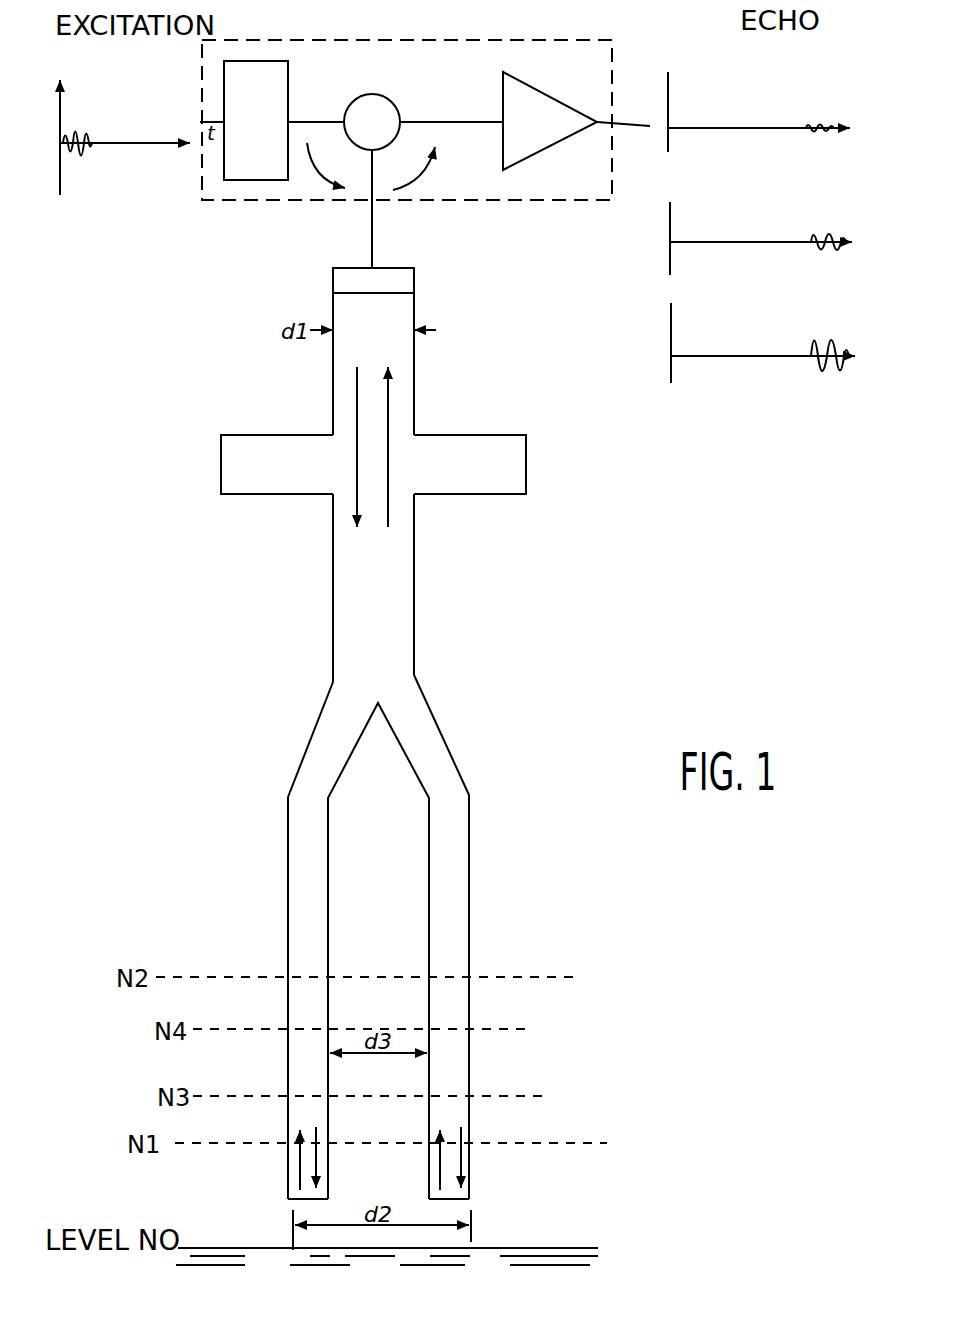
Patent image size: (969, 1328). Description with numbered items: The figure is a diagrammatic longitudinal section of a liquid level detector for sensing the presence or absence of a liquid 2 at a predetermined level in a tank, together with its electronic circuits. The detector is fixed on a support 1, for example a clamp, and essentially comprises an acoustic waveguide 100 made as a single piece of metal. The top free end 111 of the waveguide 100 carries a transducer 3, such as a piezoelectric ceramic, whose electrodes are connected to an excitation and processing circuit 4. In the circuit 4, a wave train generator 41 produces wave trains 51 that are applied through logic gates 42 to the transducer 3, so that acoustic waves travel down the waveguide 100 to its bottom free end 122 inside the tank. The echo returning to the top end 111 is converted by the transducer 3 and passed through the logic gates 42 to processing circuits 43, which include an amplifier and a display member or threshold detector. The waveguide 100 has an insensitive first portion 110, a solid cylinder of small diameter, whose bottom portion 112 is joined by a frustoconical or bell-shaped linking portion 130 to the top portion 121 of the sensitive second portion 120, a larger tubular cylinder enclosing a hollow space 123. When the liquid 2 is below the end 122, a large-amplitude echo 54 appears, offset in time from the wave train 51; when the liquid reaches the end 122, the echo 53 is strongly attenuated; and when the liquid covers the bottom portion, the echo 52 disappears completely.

The support 1 is at (527, 453).
The liquid 2 is at (549, 1248).
The transducer 3 is at (392, 268).
The excitation and processing circuit 4 is at (556, 30).
The wave train generator 41 is at (290, 80).
The logic gates 42 is at (392, 110).
The processing circuits 43 is at (557, 80).
The wave train 51 is at (73, 124).
The wave train 52 is at (814, 124).
The echo 53 is at (822, 232).
The wave train 54 is at (826, 333).
The acoustic waveguide 100 is at (455, 720).
The insensitive first portion 110 is at (333, 602).
The top free end 111 is at (414, 296).
The bottom portion 112 is at (416, 675).
The sensitive second portion 120 is at (472, 911).
The top portion 121 is at (470, 793).
The bottom free end 122 is at (472, 1199).
The hollow space 123 is at (332, 945).
The linking portion 130 is at (459, 770).